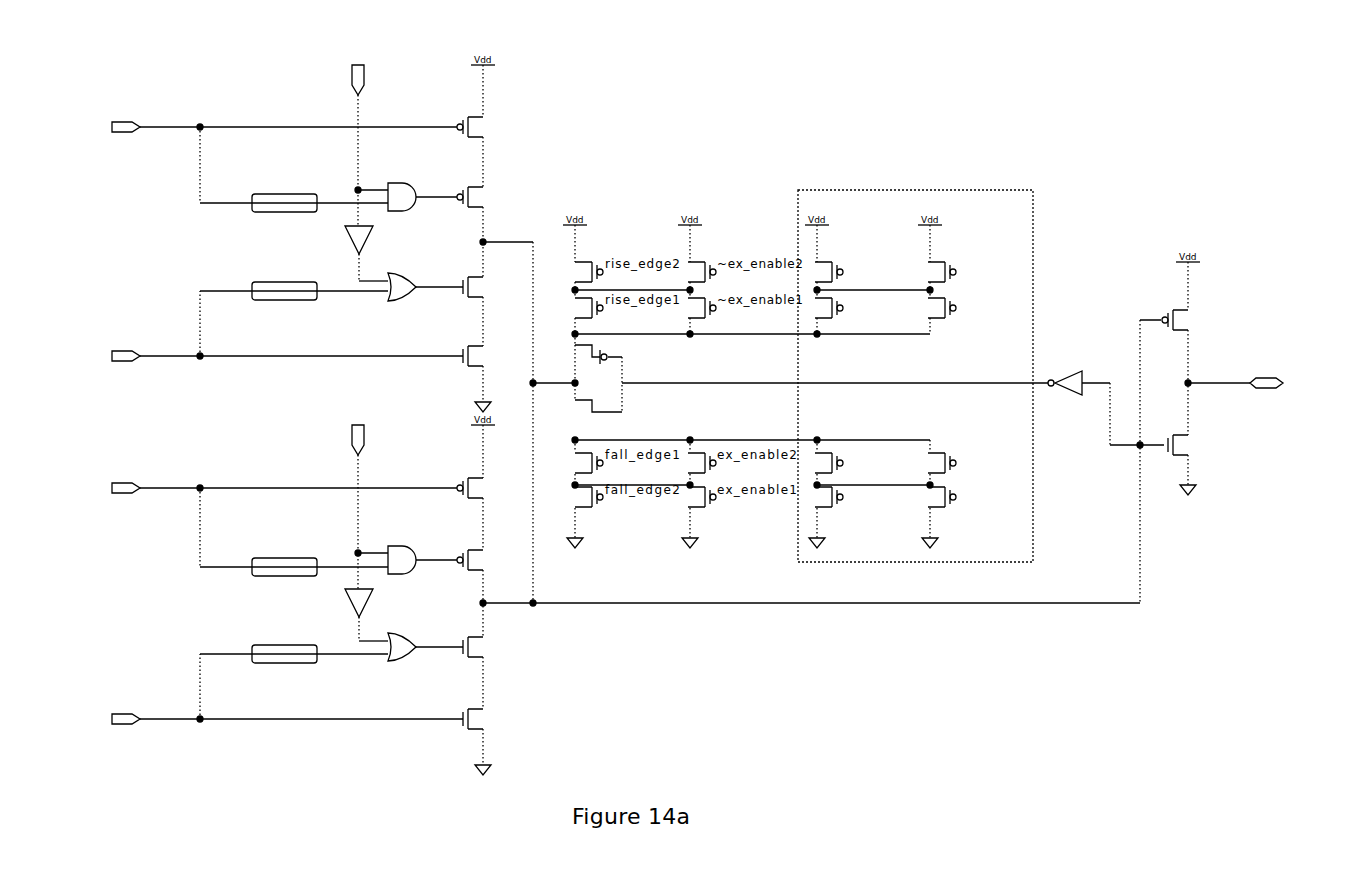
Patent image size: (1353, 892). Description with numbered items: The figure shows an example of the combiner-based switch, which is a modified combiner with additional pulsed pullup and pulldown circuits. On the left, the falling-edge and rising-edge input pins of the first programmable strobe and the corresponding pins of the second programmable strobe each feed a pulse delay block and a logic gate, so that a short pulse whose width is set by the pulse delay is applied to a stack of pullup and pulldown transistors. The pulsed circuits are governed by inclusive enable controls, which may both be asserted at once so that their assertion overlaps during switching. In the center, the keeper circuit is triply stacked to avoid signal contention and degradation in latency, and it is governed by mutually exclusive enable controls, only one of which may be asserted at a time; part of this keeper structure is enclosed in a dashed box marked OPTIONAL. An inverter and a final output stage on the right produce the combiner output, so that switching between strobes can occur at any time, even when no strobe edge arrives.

The optional keeper circuit block OPTIONAL is at (924, 376).